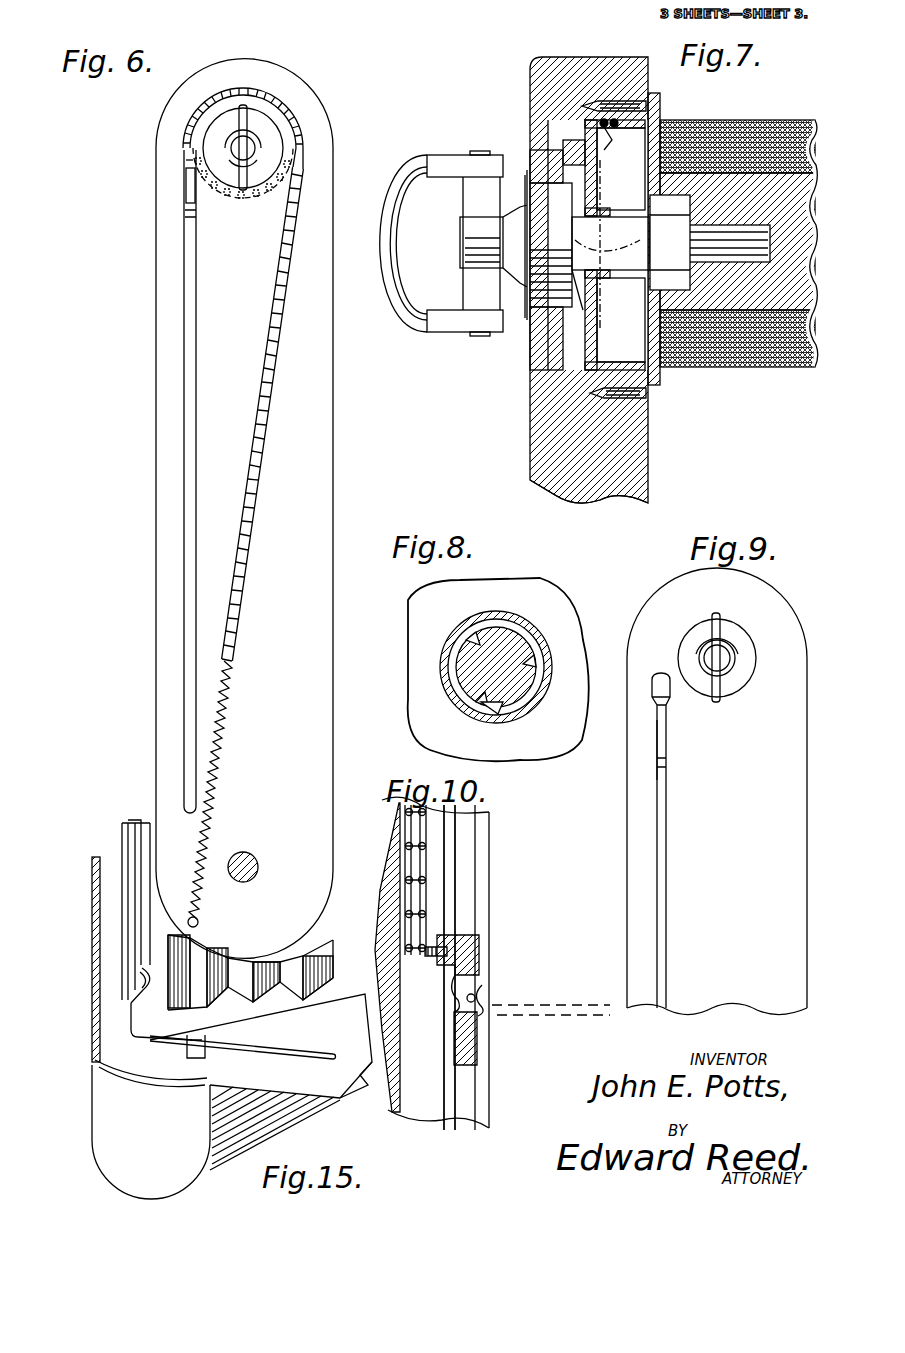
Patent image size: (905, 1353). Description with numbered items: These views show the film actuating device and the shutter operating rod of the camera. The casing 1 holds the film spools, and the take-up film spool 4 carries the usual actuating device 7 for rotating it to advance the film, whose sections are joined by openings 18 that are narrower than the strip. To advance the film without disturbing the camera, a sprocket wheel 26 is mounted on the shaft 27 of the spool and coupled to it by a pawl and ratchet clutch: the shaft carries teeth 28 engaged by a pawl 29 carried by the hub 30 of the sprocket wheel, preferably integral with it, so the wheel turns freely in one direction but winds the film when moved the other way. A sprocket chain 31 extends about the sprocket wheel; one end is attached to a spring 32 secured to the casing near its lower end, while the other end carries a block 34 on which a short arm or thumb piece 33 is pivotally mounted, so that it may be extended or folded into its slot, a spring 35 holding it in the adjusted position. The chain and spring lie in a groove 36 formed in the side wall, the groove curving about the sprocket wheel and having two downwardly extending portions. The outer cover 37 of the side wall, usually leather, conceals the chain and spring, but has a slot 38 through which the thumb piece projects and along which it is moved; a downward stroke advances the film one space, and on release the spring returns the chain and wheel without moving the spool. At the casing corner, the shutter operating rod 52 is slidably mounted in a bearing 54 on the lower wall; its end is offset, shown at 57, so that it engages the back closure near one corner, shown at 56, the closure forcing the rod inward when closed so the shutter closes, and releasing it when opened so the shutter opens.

In FIG. 6, the casing 1 is at (322, 478).
In FIG. 7, the casing 1 is at (575, 468).
In FIG. 9, the casing 1 is at (790, 815).
In FIG. 10, the casing 1 is at (432, 963).
In FIG. 15, the casing 1 is at (242, 1128).
In FIG. 7, the film spool 4 is at (740, 320).
In FIG. 6, the actuating device 7 is at (250, 120).
In FIG. 7, the actuating device 7 is at (400, 195).
In FIG. 9, the actuating device 7 is at (722, 628).
In FIG. 15, the openings 18 is at (128, 935).
In FIG. 6, the sprocket wheel 26 is at (222, 200).
In FIG. 7, the sprocket wheel 26 is at (545, 312).
In FIG. 7, the shaft 27 is at (628, 278).
In FIG. 8, the shaft 27 is at (531, 638).
In FIG. 7, the teeth 28 is at (580, 240).
In FIG. 8, the teeth 28 is at (551, 664).
In FIG. 8, the pawl 29 is at (503, 714).
In FIG. 7, the hub 30 is at (612, 195).
In FIG. 8, the hub 30 is at (442, 670).
In FIG. 6, the sprocket chain 31 is at (285, 248).
In FIG. 7, the sprocket chain 31 is at (600, 128).
In FIG. 10, the sprocket chain 31 is at (430, 858).
In FIG. 6, the spring 32 is at (232, 742).
In FIG. 6, the thumb piece 33 is at (186, 186).
In FIG. 9, the thumb piece 33 is at (662, 728).
In FIG. 10, the thumb piece 33 is at (489, 930).
In FIG. 6, the block 34 is at (187, 213).
In FIG. 10, the block 34 is at (464, 962).
In FIG. 10, the spring 35 is at (454, 998).
In FIG. 6, the groove 36 is at (196, 362).
In FIG. 7, the groove 36 is at (590, 150).
In FIG. 7, the outer cover 37 is at (540, 396).
In FIG. 9, the slot 38 is at (661, 826).
In FIG. 15, the rod 52 is at (300, 1056).
In FIG. 15, the bearing 54 is at (205, 1050).
In FIG. 15, the engagement 56 is at (133, 986).
In FIG. 15, the offset 57 is at (120, 1030).